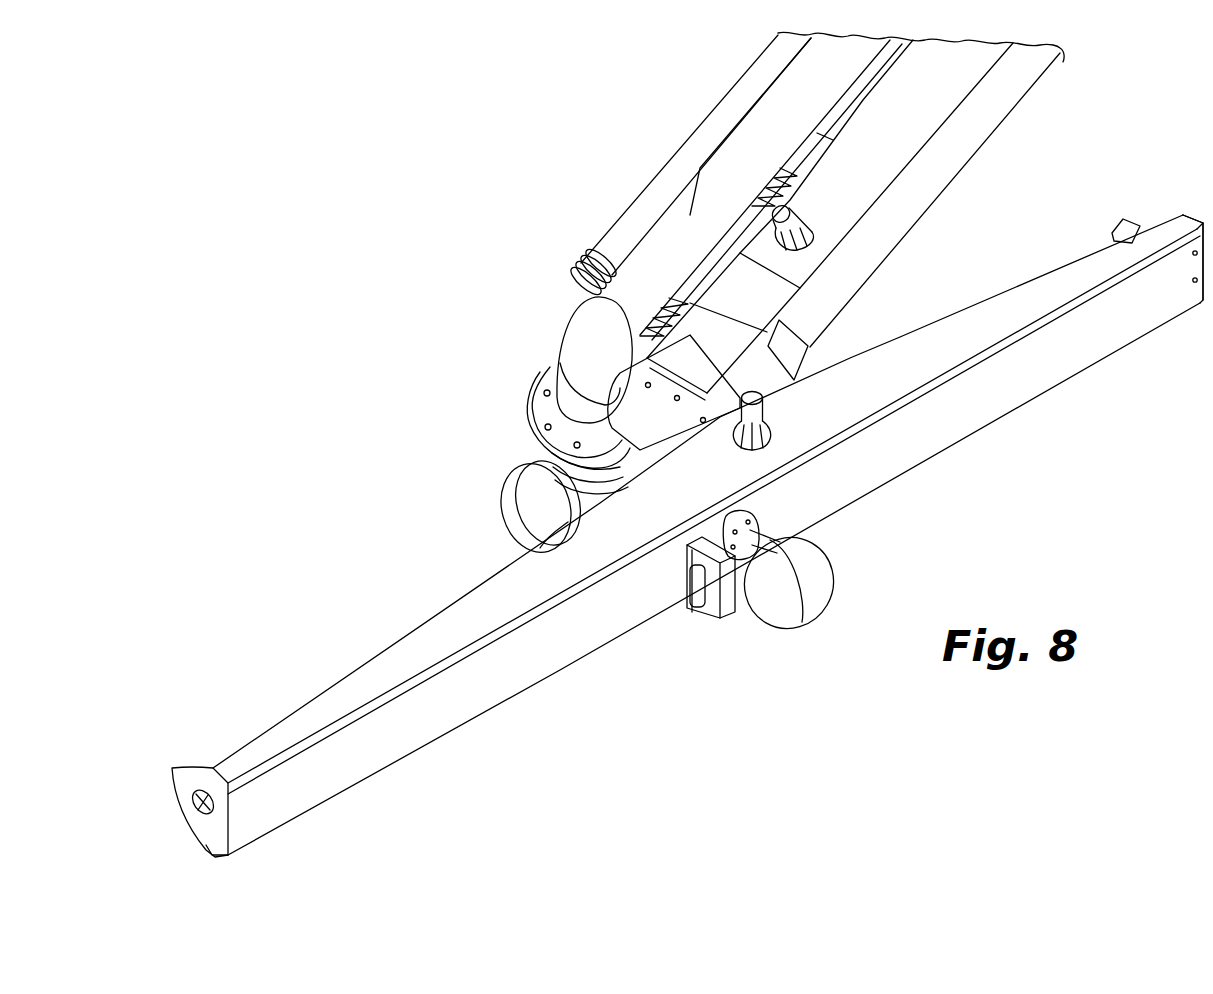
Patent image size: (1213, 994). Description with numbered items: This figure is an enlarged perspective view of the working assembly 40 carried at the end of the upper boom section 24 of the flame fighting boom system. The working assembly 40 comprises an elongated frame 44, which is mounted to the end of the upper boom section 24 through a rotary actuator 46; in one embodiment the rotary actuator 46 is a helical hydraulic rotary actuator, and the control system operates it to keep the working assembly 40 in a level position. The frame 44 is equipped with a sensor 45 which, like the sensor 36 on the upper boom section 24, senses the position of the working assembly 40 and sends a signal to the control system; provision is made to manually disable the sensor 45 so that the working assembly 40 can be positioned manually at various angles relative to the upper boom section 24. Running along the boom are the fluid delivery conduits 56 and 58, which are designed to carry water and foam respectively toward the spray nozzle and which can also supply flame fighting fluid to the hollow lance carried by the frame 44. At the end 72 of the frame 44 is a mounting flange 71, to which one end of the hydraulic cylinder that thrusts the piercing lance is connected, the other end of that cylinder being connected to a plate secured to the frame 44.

The upper boom section 24 is at (997, 133).
The sensor 36 is at (793, 198).
The working assembly 40 is at (358, 648).
The elongated frame 44 is at (507, 557).
The sensor 45 is at (760, 384).
The rotary actuator 46 is at (668, 436).
The conduit 56 is at (688, 217).
The conduit 58 is at (678, 163).
The mounting flange 71 is at (1110, 218).
The end of frame 72 is at (1183, 213).